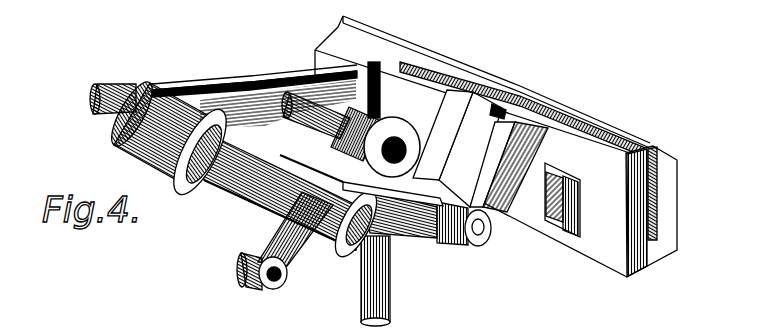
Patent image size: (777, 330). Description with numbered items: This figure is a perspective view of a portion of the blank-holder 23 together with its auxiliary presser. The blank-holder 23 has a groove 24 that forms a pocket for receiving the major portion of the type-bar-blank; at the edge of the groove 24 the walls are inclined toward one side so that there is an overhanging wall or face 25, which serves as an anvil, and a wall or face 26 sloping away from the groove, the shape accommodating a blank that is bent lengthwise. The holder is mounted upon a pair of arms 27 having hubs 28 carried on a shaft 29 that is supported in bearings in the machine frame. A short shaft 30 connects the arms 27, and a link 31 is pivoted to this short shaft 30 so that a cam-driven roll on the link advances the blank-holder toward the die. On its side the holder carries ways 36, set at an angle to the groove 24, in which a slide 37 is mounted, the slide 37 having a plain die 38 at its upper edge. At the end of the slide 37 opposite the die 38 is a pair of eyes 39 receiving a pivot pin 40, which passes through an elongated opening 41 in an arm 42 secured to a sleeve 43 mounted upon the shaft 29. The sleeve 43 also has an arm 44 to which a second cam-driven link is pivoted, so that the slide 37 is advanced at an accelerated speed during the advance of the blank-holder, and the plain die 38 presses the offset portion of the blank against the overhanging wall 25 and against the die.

The blank-holder 23 is at (668, 183).
The groove 24 is at (660, 212).
The overhanging wall or face 25 is at (663, 152).
The wall or face sloping away from the groove 26 is at (627, 186).
The arms 27 is at (250, 78).
The hubs 28 is at (150, 85).
The shaft 29 is at (100, 85).
The short shaft 30 is at (351, 134).
The link 31 is at (358, 290).
The ways 36 is at (440, 117).
The slide 37 is at (472, 149).
The plain die 38 is at (503, 96).
The eyes 39 is at (474, 248).
The pivot pin 40 is at (488, 227).
The elongated opening 41 is at (441, 243).
The arm 42 is at (427, 222).
The sleeve 43 is at (248, 205).
The arm 44 is at (240, 272).